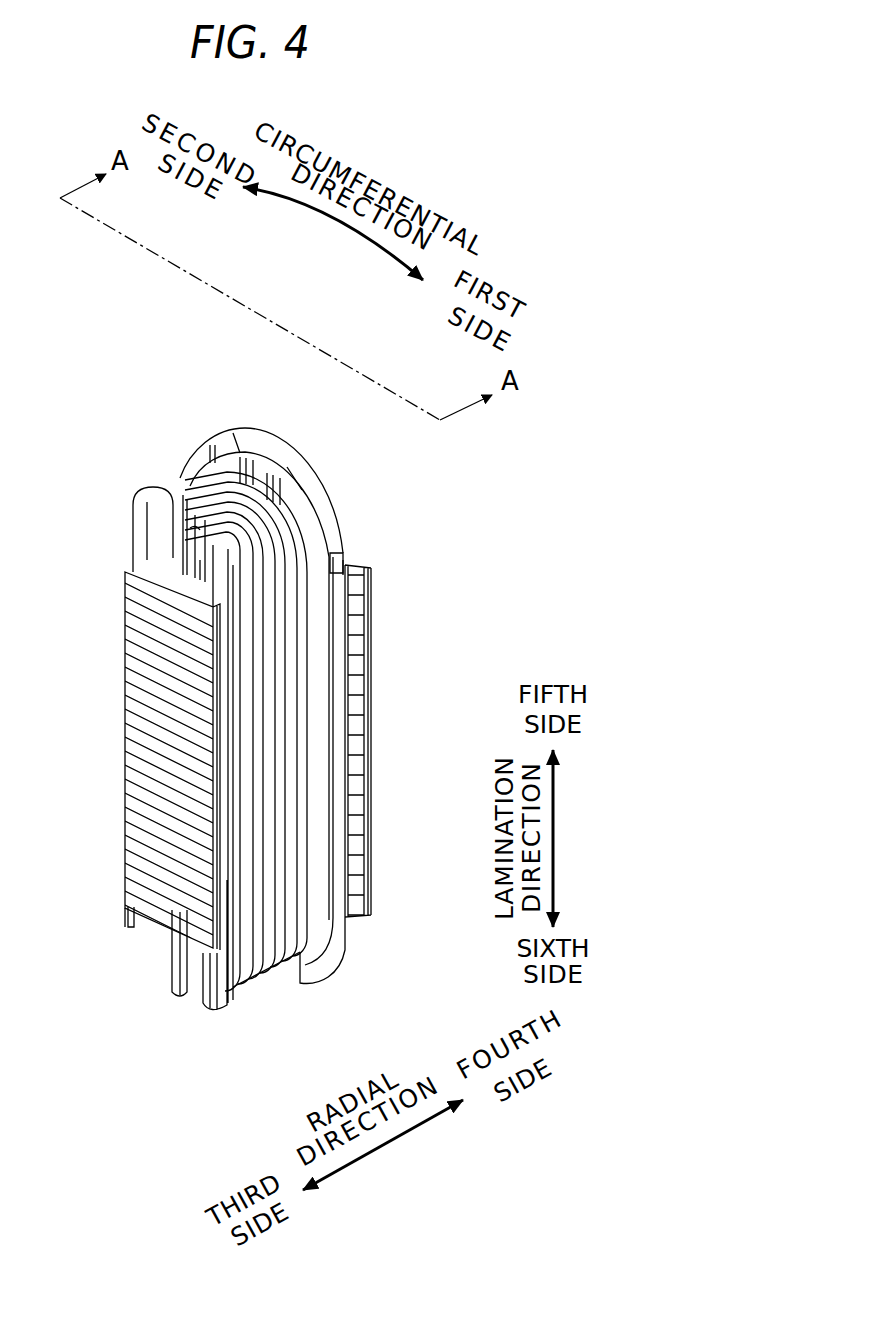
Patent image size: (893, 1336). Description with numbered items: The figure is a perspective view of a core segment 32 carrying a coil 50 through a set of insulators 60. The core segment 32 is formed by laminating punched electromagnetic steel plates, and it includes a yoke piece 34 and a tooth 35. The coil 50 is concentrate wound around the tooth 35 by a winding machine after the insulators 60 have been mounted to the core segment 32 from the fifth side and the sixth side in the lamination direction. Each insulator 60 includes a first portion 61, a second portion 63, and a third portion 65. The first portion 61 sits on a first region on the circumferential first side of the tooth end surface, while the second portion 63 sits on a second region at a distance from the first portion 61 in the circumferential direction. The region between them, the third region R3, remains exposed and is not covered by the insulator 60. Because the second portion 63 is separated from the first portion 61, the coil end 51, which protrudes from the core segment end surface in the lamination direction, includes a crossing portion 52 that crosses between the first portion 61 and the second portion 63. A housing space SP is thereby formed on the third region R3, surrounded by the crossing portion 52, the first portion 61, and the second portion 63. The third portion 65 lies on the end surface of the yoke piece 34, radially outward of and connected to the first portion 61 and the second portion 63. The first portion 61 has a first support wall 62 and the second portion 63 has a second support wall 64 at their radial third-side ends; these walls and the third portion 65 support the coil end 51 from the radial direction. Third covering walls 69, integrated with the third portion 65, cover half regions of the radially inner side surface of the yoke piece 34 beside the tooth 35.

The core segment 32 is at (325, 724).
The yoke piece 34 is at (352, 560).
The tooth 35 is at (168, 657).
The coil 50 is at (233, 718).
The coil end 51 is at (182, 484).
The crossing portion 52 is at (177, 522).
The insulator 60 is at (234, 410).
The first portion 61 is at (203, 575).
The first support wall 62 is at (178, 556).
The second portion 63 is at (148, 535).
The second support wall 64 is at (163, 503).
The third portion 65 is at (279, 431).
The third covering wall 69 is at (313, 667).
The housing space SP is at (177, 572).
The third region R3 is at (193, 532).